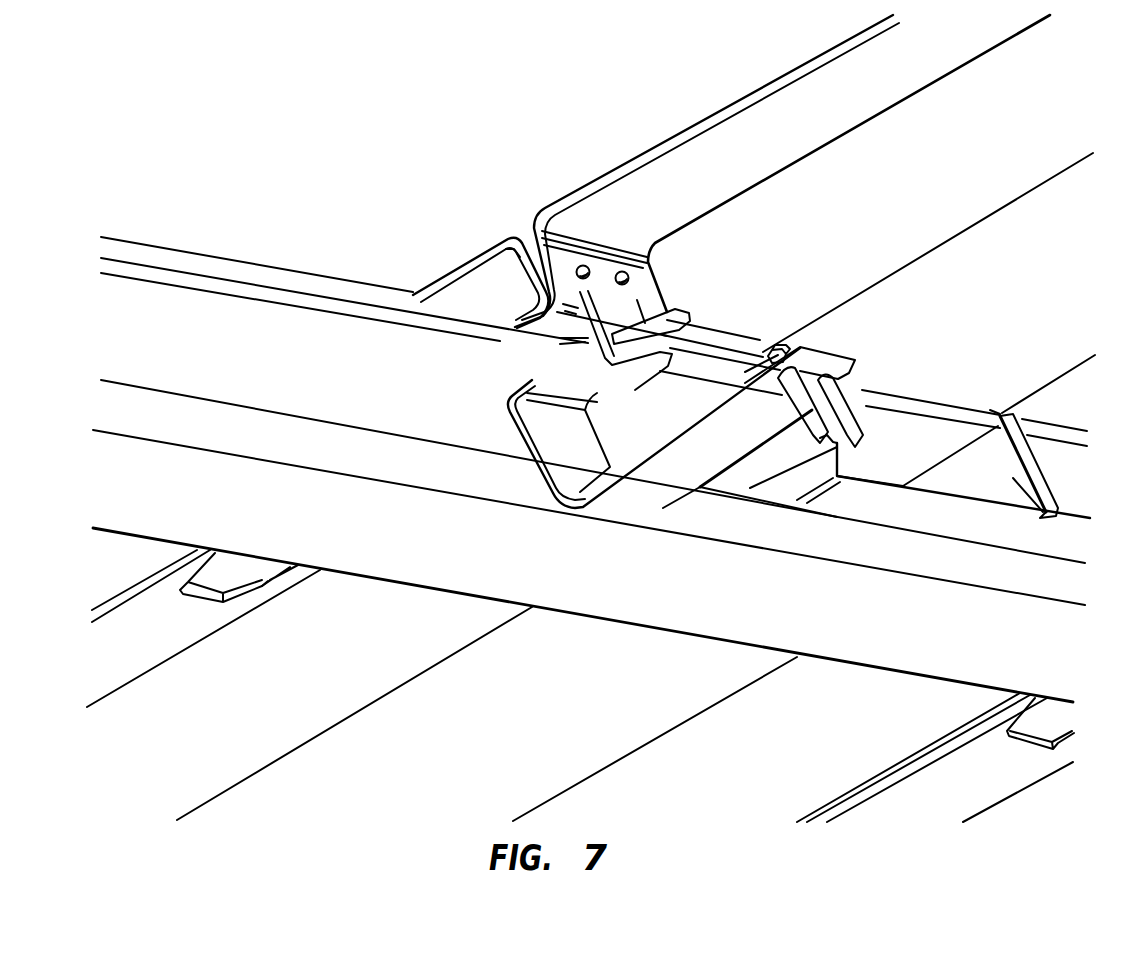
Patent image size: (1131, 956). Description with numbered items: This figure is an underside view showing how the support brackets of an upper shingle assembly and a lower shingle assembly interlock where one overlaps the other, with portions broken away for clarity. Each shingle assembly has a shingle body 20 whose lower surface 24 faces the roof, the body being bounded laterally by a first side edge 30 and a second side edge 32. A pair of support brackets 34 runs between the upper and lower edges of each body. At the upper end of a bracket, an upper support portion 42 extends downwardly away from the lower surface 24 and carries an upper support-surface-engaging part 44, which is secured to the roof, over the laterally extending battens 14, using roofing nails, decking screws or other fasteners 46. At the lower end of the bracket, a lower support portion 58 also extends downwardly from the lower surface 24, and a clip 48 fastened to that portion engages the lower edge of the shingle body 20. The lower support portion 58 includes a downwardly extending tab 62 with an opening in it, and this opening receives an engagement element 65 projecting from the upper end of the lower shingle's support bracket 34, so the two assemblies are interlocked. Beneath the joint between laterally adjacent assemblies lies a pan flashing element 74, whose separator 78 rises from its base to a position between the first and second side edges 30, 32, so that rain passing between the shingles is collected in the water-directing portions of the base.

The batten 14 is at (414, 537).
The shingle body 20 is at (250, 280).
The lower surface 24 is at (314, 370).
The first side edge 30 is at (990, 411).
The second side edge 32 is at (1035, 420).
The support bracket 34 is at (740, 100).
The upper support portion 42 is at (860, 333).
The upper support-surface-engaging part 44 is at (720, 459).
The fastener 46 is at (852, 415).
The clip 48 is at (457, 270).
The lower support portion 58 is at (683, 251).
The downwardly extending tab 62 is at (617, 312).
The engagement element 65 is at (689, 313).
The pan flashing element 74 is at (908, 515).
The separator 78 is at (1013, 478).